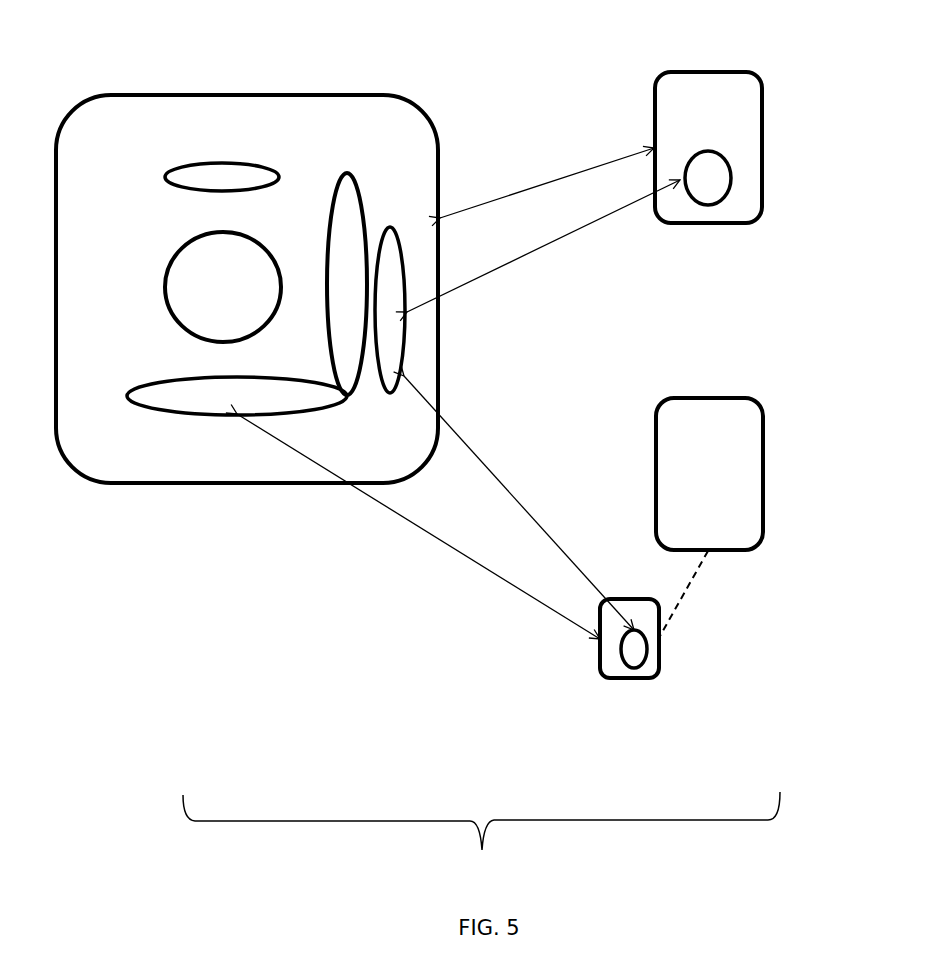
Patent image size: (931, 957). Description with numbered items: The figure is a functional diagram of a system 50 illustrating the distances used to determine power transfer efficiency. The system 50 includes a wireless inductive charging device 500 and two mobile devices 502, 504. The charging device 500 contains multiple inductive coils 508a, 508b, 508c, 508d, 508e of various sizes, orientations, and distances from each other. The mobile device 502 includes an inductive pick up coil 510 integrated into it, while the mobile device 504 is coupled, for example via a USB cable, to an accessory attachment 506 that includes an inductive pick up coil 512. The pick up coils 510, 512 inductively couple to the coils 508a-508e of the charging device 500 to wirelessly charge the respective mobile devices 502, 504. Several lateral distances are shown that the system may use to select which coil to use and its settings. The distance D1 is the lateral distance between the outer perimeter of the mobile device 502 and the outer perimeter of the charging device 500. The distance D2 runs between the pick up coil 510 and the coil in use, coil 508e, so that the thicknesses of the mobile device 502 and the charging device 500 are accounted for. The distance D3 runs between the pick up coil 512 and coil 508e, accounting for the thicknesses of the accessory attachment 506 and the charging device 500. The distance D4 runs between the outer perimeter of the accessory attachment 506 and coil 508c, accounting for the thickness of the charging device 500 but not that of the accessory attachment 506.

The wireless inductive charging device 500 is at (128, 94).
The inductive coil 508a is at (195, 160).
The inductive coil 508b is at (165, 267).
The inductive coil 508c is at (145, 382).
The inductive coil 508d is at (338, 180).
The inductive coil 508e is at (389, 226).
The mobile device 502 is at (750, 71).
The inductive pick up coil 510 is at (712, 151).
The mobile device 504 is at (752, 396).
The accessory attachment 506 is at (656, 676).
The inductive pick up coil 512 is at (648, 655).
The distance D1 is at (542, 186).
The distance D2 is at (548, 243).
The distance D3 is at (502, 482).
The distance D4 is at (439, 537).
The system 50 is at (481, 834).